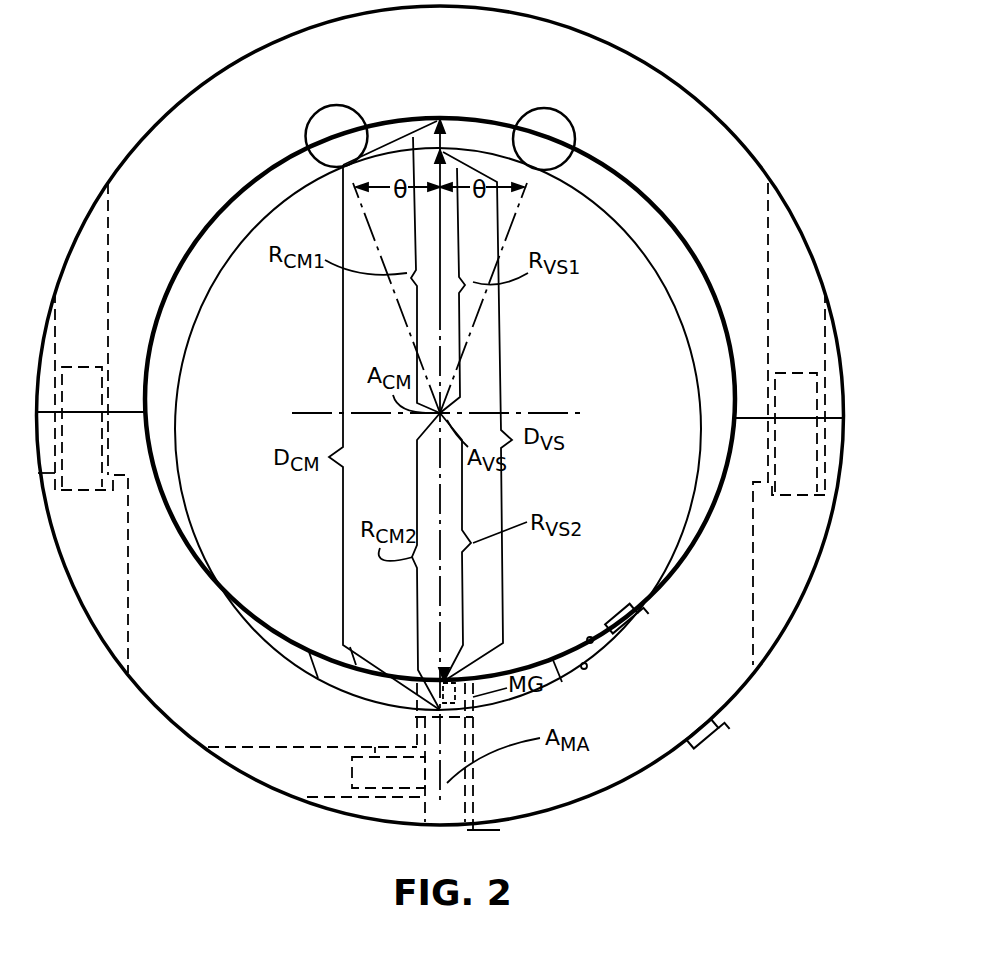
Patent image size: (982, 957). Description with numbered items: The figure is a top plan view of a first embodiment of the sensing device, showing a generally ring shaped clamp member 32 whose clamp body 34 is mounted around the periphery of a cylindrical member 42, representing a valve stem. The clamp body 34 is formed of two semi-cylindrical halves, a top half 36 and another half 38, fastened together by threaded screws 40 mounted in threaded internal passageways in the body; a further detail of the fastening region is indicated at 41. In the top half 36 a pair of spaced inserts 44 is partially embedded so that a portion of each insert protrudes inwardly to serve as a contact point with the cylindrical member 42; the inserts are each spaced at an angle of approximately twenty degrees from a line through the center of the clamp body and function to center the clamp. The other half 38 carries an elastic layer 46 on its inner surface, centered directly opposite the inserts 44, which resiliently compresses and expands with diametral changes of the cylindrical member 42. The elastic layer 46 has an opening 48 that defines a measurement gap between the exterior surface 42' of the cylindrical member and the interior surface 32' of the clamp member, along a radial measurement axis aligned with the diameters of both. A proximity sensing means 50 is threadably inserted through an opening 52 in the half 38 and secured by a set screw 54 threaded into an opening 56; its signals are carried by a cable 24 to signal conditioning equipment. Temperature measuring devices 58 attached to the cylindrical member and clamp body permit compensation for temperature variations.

The cable 24 is at (500, 830).
The clamp member 32 is at (440, 399).
The clamp body 34 is at (828, 330).
The top half of the clamp body 36 is at (178, 110).
The other half of the clamp body 38 is at (143, 677).
The threaded screws 40 is at (815, 395).
The pole face 41 is at (830, 447).
The cylindrical member 42 is at (438, 429).
The inserts 44 is at (355, 103).
The elastic layer 46 is at (350, 645).
The opening in the elastic layer 48 is at (448, 667).
The proximity sensing means 50 is at (465, 747).
The opening in the clamp body half 52 is at (475, 800).
The set screw 54 is at (375, 747).
The opening for set screw 56 is at (278, 747).
The temperature measuring devices 58 is at (622, 607).
The exterior surface of the cylindrical member 42' is at (565, 625).
The interior surface of the clamp member 32' is at (615, 680).